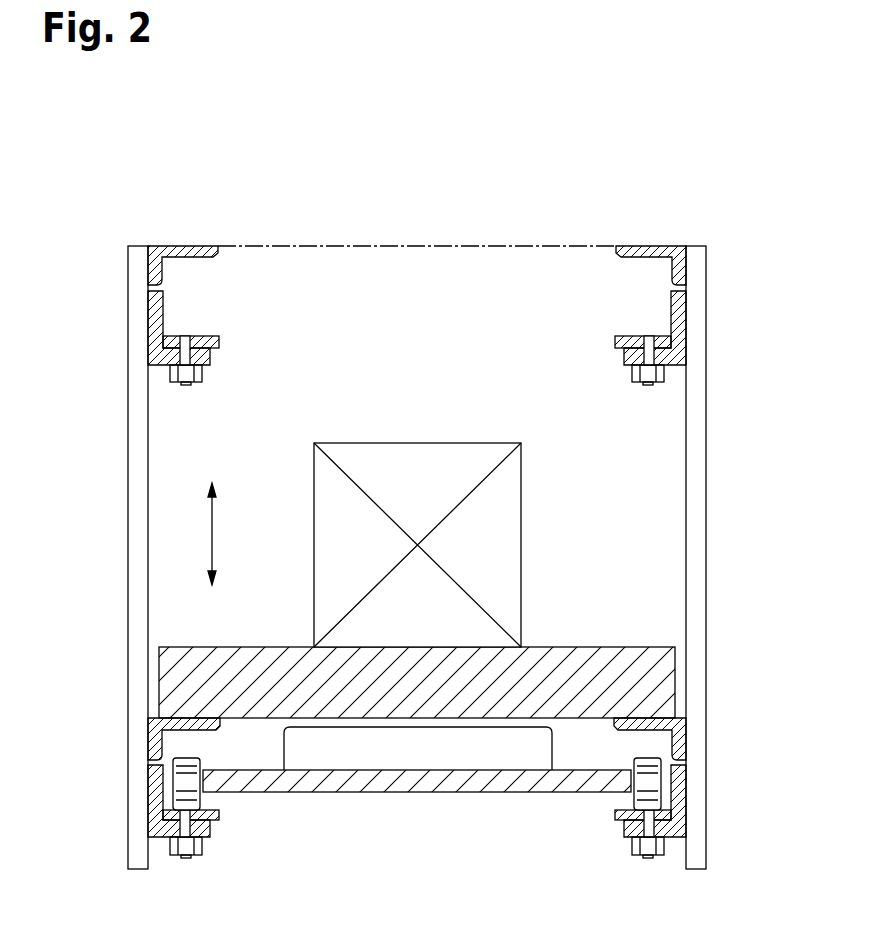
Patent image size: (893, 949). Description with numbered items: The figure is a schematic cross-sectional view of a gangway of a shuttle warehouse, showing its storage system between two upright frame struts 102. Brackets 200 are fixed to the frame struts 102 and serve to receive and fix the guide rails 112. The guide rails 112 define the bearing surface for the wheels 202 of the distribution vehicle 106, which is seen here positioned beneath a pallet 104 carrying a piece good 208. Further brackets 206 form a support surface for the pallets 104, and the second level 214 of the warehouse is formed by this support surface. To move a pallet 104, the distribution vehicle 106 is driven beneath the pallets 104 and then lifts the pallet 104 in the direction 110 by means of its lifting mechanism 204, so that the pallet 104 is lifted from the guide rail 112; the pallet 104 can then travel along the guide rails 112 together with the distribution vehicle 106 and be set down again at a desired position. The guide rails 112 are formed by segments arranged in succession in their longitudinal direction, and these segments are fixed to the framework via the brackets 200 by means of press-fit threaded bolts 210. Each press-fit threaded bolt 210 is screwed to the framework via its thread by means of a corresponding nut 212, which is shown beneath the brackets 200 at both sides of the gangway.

The frame strut 102 is at (135, 537).
The pallet 104 is at (666, 690).
The distribution vehicle 106 is at (378, 786).
The direction 110 is at (213, 537).
The guide rail 112 is at (219, 342).
The bracket 200 is at (160, 358).
The wheel 202 is at (186, 777).
The lifting mechanism 204 is at (462, 752).
The bracket 206 is at (184, 246).
The piece good 208 is at (521, 537).
The press-fit threaded bolt 210 is at (190, 356).
The nut 212 is at (200, 380).
The second level 214 is at (394, 246).